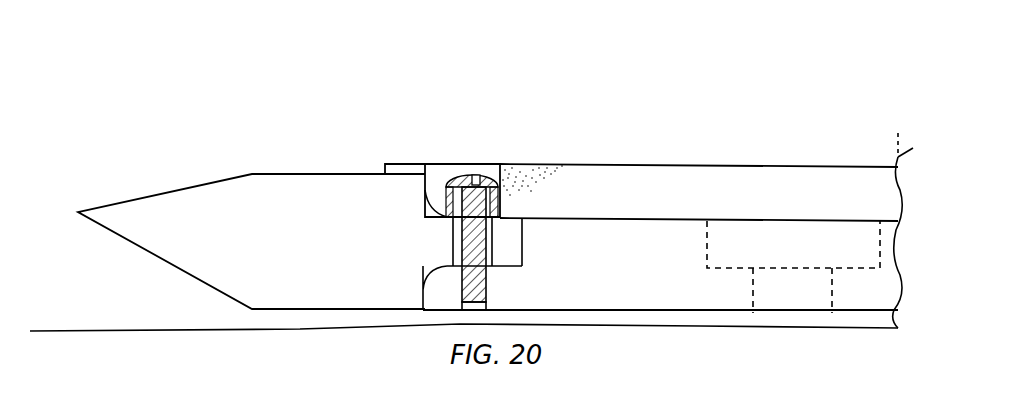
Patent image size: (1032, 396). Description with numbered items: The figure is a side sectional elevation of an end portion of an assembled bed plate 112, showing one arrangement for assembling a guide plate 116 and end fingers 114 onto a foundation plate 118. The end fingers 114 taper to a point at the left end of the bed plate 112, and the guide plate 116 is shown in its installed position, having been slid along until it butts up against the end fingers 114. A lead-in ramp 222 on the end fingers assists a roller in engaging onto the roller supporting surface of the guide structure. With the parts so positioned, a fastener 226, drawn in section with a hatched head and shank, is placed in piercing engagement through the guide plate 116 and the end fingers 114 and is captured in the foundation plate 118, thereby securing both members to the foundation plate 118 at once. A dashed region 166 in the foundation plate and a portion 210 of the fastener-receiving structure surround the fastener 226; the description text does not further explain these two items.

The bed plate 112 is at (237, 128).
The end fingers 114 is at (337, 234).
The guide plate 116 is at (742, 207).
The foundation plate 118 is at (632, 288).
The cavity 166 is at (810, 264).
The fastener housing 210 is at (505, 200).
The lead-in ramp 222 is at (401, 172).
The fastener 226 is at (479, 166).